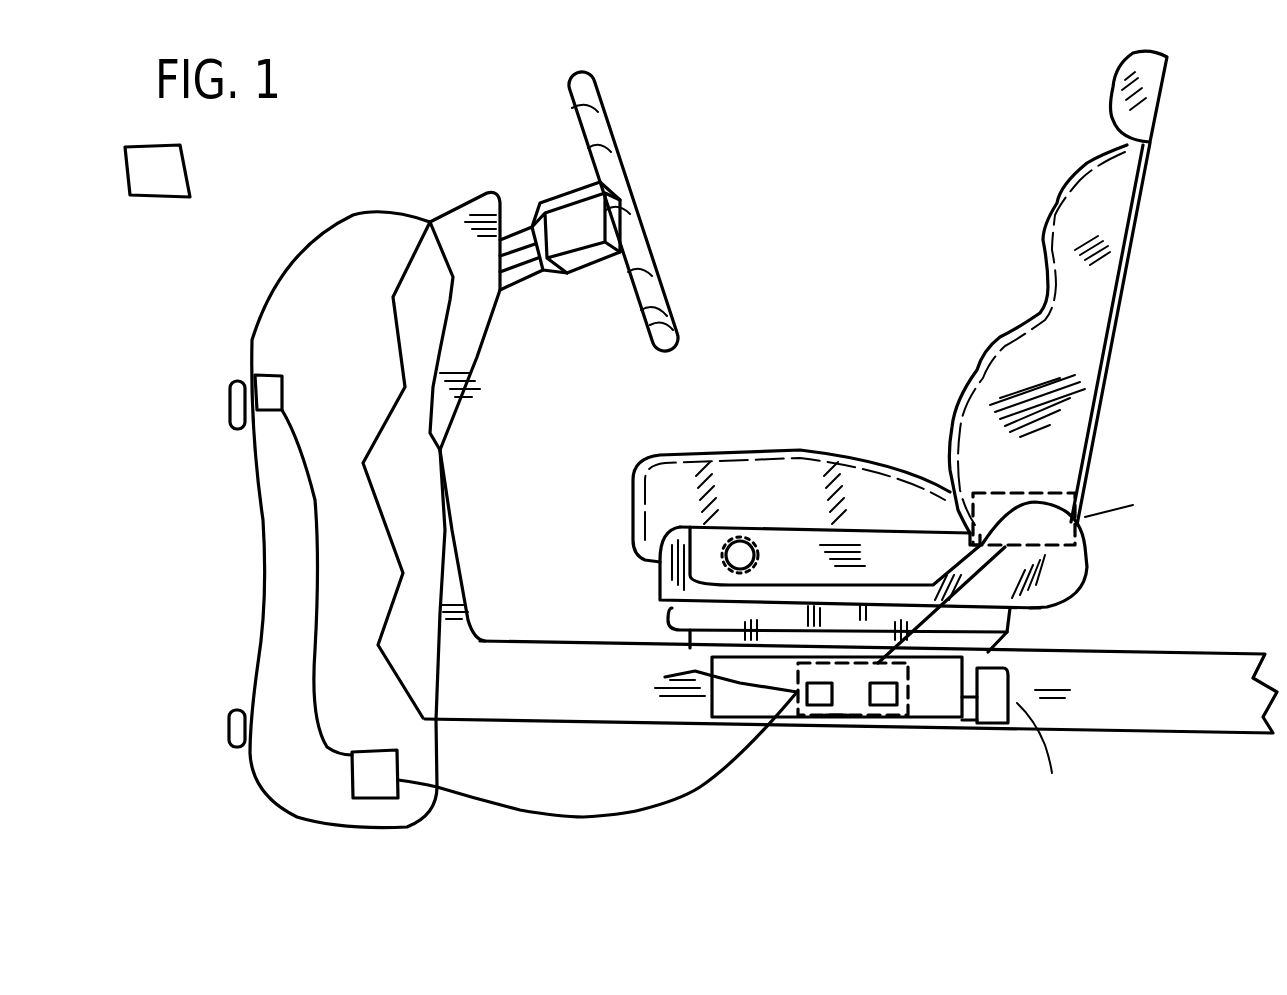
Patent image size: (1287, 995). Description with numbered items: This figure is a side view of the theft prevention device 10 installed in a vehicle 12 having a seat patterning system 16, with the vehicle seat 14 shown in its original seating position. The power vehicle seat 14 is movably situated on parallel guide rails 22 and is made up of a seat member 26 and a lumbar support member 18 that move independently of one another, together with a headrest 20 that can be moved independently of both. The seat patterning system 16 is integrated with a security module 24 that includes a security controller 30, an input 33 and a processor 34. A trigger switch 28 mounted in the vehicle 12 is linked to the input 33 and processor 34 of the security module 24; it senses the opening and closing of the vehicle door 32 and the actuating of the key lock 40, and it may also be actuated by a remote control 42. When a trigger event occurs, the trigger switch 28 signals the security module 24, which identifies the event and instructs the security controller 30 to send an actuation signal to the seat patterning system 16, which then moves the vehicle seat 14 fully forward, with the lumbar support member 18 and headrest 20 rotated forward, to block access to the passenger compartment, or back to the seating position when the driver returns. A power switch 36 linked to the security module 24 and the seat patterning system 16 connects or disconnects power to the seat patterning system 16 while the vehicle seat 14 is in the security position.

The theft prevention device 10 is at (797, 740).
The vehicle 12 is at (850, 196).
The vehicle seat 14 is at (818, 428).
The seat patterning system 16 is at (712, 705).
The lumbar support member 18 is at (1120, 345).
The headrest 20 is at (1162, 92).
The parallel guide rails 22 is at (1007, 647).
The security module 24 is at (847, 715).
The seat member 26 is at (653, 457).
The trigger switch 28 is at (393, 800).
The security controller 30 is at (887, 715).
The vehicle door 32 is at (283, 778).
The input 33 is at (665, 677).
The processor 34 is at (825, 717).
The power switch 36 is at (993, 727).
The key lock 40 is at (270, 372).
The remote control 42 is at (137, 208).